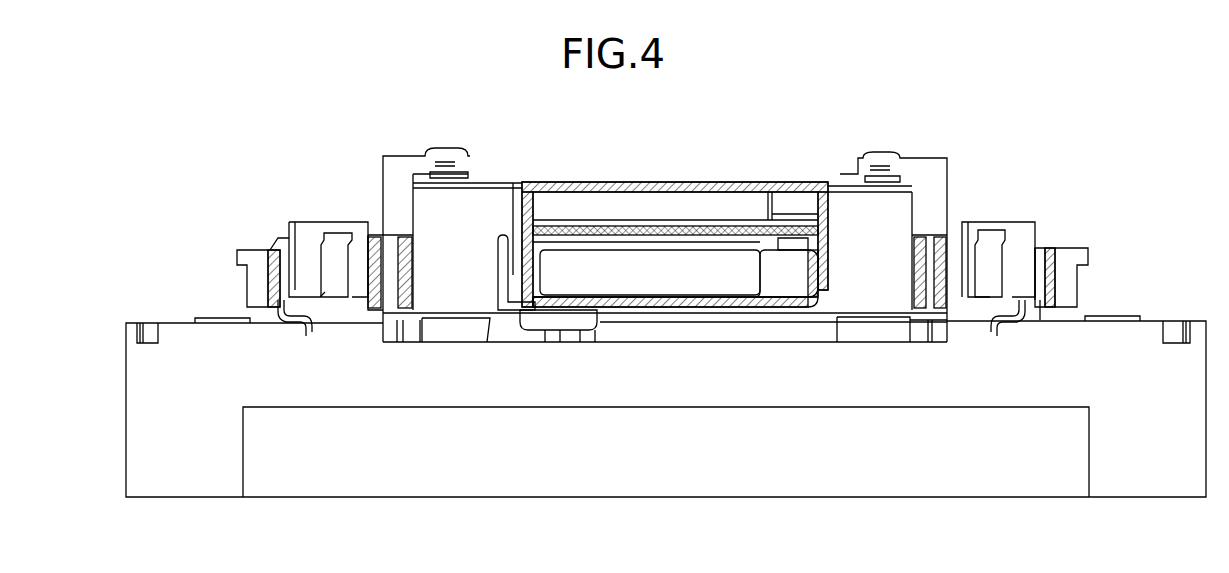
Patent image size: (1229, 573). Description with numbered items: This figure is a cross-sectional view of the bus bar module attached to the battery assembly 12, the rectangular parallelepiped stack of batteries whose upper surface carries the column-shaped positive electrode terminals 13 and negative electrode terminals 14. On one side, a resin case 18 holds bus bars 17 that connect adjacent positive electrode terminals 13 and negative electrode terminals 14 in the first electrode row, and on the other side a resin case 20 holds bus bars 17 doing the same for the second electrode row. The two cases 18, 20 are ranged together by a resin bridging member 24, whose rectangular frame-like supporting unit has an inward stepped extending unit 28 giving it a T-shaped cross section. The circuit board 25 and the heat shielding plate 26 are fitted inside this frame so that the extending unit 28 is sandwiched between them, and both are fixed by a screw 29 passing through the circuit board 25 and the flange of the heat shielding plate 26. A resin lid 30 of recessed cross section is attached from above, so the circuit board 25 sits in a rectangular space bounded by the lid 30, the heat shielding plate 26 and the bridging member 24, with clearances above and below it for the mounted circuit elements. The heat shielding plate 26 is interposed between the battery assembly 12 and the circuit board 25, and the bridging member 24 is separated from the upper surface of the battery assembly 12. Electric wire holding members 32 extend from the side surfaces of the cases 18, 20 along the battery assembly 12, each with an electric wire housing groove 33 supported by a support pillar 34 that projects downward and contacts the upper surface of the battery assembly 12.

The battery assembly 12 is at (126, 430).
The positive electrode terminal 13 is at (992, 228).
The negative electrode terminal 14 is at (338, 222).
The bus bar 17 is at (306, 266).
The case 18 is at (1088, 284).
The case 20 is at (237, 270).
The bridging member 24 is at (830, 240).
The circuit board 25 is at (698, 220).
The heat shielding plate 26 is at (633, 290).
The extending unit 28 is at (562, 228).
The screw 29 is at (792, 220).
The lid 30 is at (647, 182).
The electric wire holding member 32 is at (497, 258).
The electric wire housing groove 33 is at (513, 236).
The support pillar 34 is at (520, 312).